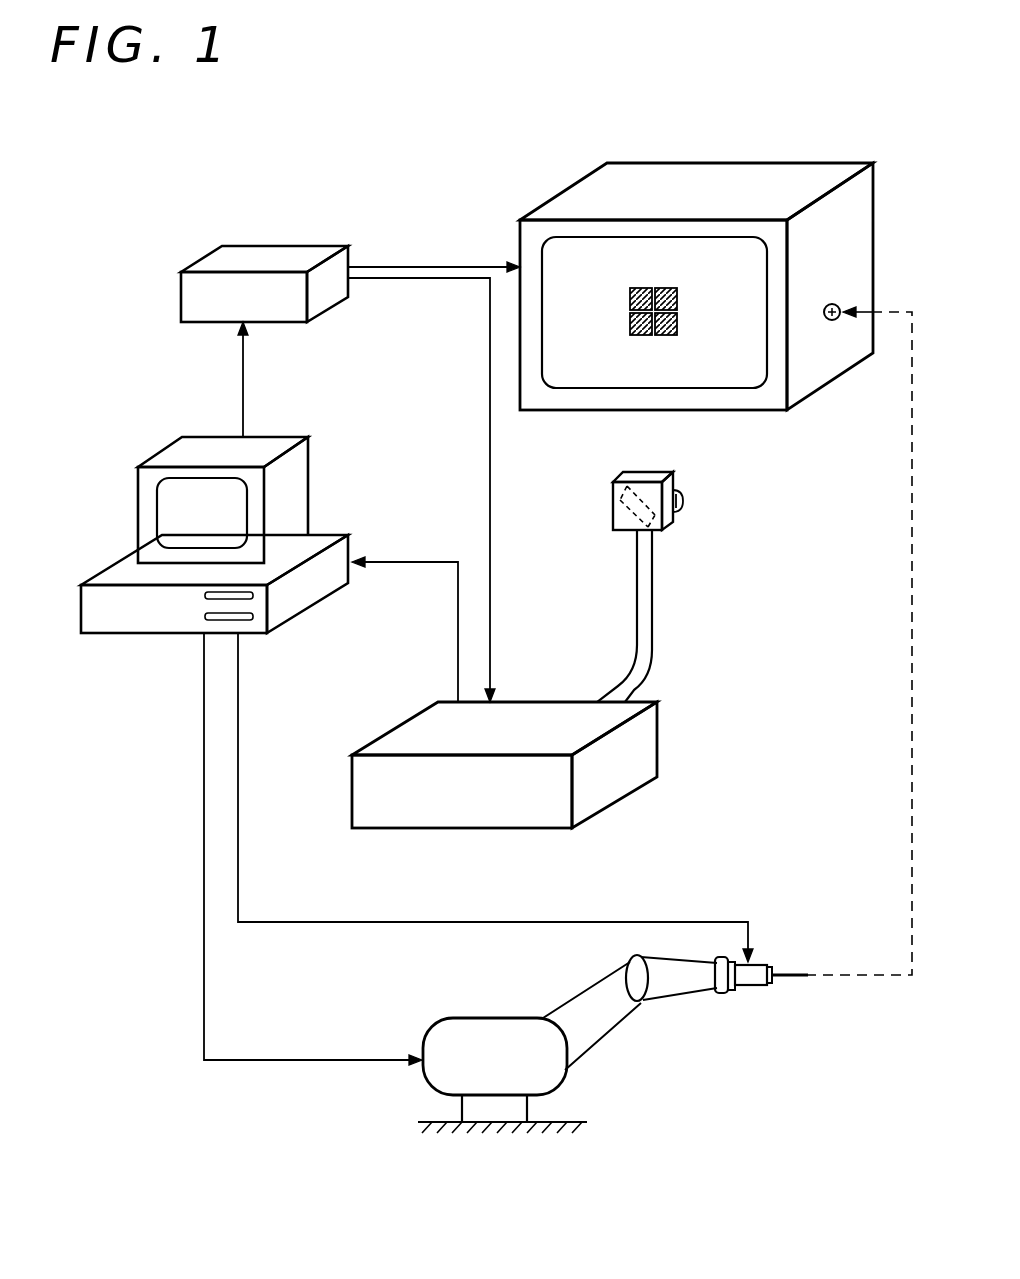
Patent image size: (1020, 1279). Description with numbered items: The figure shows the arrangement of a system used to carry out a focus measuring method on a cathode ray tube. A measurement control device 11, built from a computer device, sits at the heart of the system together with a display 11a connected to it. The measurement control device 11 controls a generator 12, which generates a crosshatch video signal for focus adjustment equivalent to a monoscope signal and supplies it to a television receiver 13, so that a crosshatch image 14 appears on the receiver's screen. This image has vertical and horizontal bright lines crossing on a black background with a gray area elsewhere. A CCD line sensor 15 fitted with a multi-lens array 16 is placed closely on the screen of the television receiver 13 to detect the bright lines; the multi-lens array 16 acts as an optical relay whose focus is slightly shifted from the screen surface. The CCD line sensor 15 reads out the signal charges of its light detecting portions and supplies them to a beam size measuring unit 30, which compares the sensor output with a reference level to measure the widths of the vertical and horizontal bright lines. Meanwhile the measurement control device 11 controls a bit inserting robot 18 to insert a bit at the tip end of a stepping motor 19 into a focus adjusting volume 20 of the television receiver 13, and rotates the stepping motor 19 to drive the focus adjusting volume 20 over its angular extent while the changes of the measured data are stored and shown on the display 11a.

The measurement control device 11 is at (240, 511).
The display 11a is at (178, 492).
The generator 12 is at (303, 246).
The television receiver 13 is at (730, 172).
The crosshatch image 14 is at (679, 303).
The CCD line sensor 15 is at (681, 572).
The multi-lens array 16 is at (684, 496).
The bit inserting robot 18 is at (483, 1018).
The stepping motor 19 is at (745, 993).
The focus adjusting volume 20 is at (838, 305).
The beam size measuring unit 30 is at (660, 748).